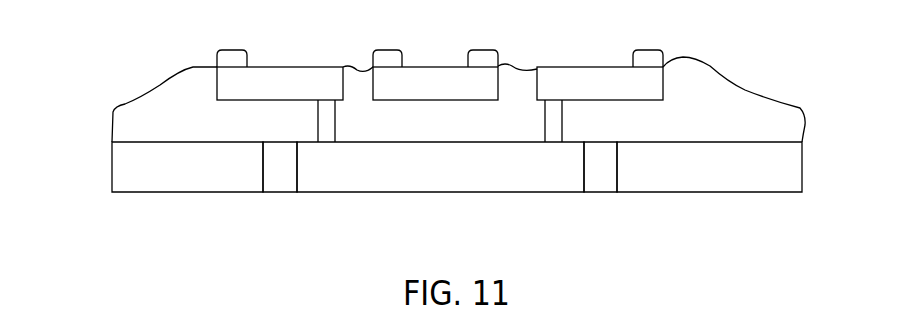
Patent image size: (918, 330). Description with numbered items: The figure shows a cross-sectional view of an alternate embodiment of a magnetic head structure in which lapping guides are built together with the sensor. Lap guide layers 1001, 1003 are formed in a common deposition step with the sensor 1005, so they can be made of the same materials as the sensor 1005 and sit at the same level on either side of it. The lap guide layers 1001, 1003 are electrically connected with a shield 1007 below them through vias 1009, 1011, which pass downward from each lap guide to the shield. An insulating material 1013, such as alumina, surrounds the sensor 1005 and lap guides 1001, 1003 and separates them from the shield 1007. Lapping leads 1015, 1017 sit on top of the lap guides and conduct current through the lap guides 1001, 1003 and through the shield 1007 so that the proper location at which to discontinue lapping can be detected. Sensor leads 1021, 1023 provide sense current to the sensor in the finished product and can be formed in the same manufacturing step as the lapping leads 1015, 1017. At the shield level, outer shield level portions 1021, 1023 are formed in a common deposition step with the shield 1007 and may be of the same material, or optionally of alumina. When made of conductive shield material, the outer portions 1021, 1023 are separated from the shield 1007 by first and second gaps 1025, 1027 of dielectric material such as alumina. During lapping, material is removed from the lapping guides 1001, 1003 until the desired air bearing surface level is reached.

The lap guide layer 1001 is at (312, 76).
The lap guide layer 1003 is at (583, 77).
The sensor 1005 is at (443, 77).
The shield 1007 is at (460, 178).
The via 1009 is at (327, 123).
The via 1011 is at (558, 128).
The insulating material 1013 is at (167, 105).
The lapping lead 1015 is at (228, 62).
The lapping lead 1017 is at (643, 60).
The sensor lead / outer shield level portion 1021 is at (195, 178).
The sensor lead / outer shield level portion 1023 is at (663, 178).
The first gap 1025 is at (275, 177).
The second gap 1027 is at (592, 183).